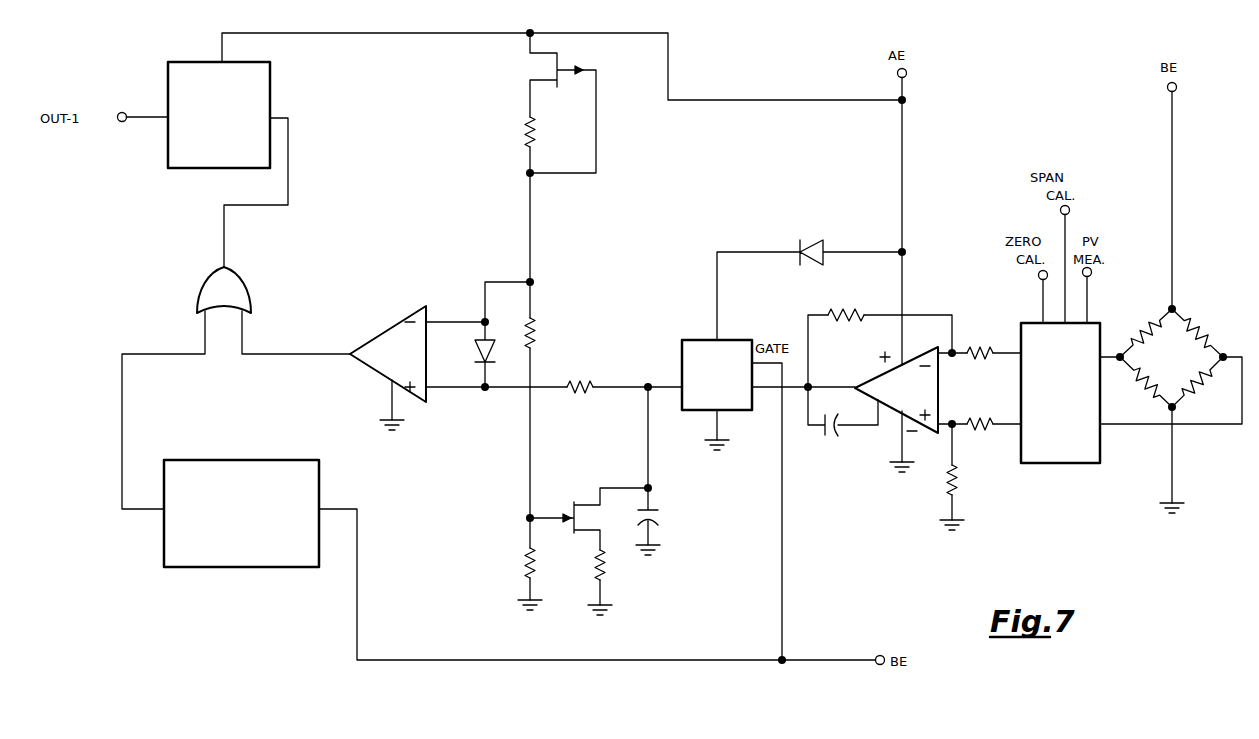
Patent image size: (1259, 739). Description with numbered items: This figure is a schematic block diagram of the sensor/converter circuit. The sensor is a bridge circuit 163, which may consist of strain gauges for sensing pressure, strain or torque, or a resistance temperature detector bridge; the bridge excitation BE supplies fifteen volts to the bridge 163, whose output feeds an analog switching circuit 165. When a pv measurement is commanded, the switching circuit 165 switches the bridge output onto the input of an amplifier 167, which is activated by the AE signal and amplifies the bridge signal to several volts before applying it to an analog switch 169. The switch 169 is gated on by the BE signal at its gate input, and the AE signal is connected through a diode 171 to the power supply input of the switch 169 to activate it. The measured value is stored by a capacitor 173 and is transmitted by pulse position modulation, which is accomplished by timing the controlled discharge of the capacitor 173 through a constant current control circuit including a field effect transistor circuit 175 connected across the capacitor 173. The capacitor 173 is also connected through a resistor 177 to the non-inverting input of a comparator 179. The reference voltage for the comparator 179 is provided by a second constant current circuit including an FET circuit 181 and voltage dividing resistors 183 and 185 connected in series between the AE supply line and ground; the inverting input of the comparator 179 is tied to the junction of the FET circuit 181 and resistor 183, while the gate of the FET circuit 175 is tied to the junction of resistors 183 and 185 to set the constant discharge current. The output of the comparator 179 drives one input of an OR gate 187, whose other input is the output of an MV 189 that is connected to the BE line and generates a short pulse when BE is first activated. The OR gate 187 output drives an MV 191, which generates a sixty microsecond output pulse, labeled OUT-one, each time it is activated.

The bridge circuit 163 is at (1187, 368).
The analog switching circuit 165 is at (1077, 372).
The amplifier 167 is at (921, 400).
The analog switch 169 is at (690, 325).
The diode 171 is at (812, 243).
The capacitor 173 is at (652, 513).
The field effect transistor circuit 175 is at (578, 567).
The resistor 177 is at (585, 378).
The comparator 179 is at (408, 360).
The FET circuit 181 is at (570, 123).
The voltage dividing resistor 183 is at (535, 327).
The voltage dividing resistor 185 is at (520, 558).
The OR gate 187 is at (243, 281).
The MV 189 is at (321, 467).
The MV 191 is at (271, 82).